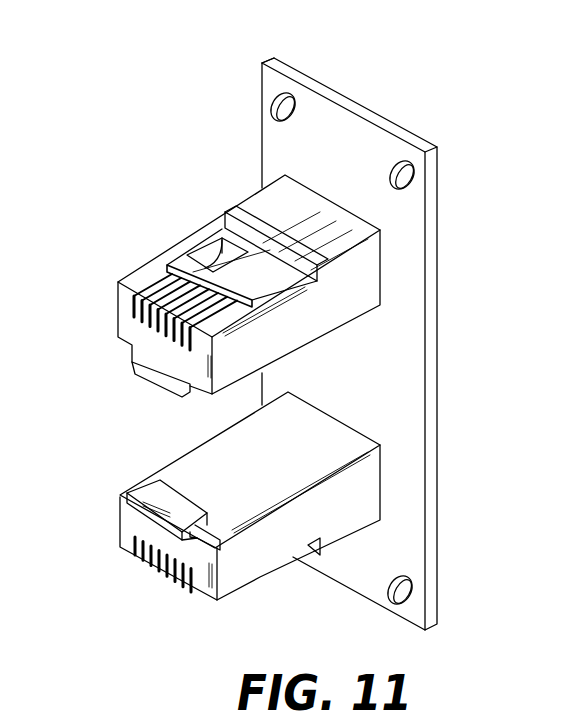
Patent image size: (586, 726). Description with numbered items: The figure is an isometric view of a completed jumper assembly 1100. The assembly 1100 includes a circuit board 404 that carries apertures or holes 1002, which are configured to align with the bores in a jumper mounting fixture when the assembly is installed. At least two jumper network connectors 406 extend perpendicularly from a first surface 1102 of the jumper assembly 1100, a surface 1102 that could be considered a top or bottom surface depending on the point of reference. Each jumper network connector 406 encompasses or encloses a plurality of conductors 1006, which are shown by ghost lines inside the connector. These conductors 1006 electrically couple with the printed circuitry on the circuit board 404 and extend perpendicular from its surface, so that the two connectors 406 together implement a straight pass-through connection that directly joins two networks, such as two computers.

The jumper assembly 1100 is at (96, 84).
The circuit board 404 is at (324, 344).
The jumper network connector 406 is at (234, 384).
The holes 1002 is at (390, 168).
The conductors 1006 is at (302, 237).
The first surface 1102 is at (356, 344).